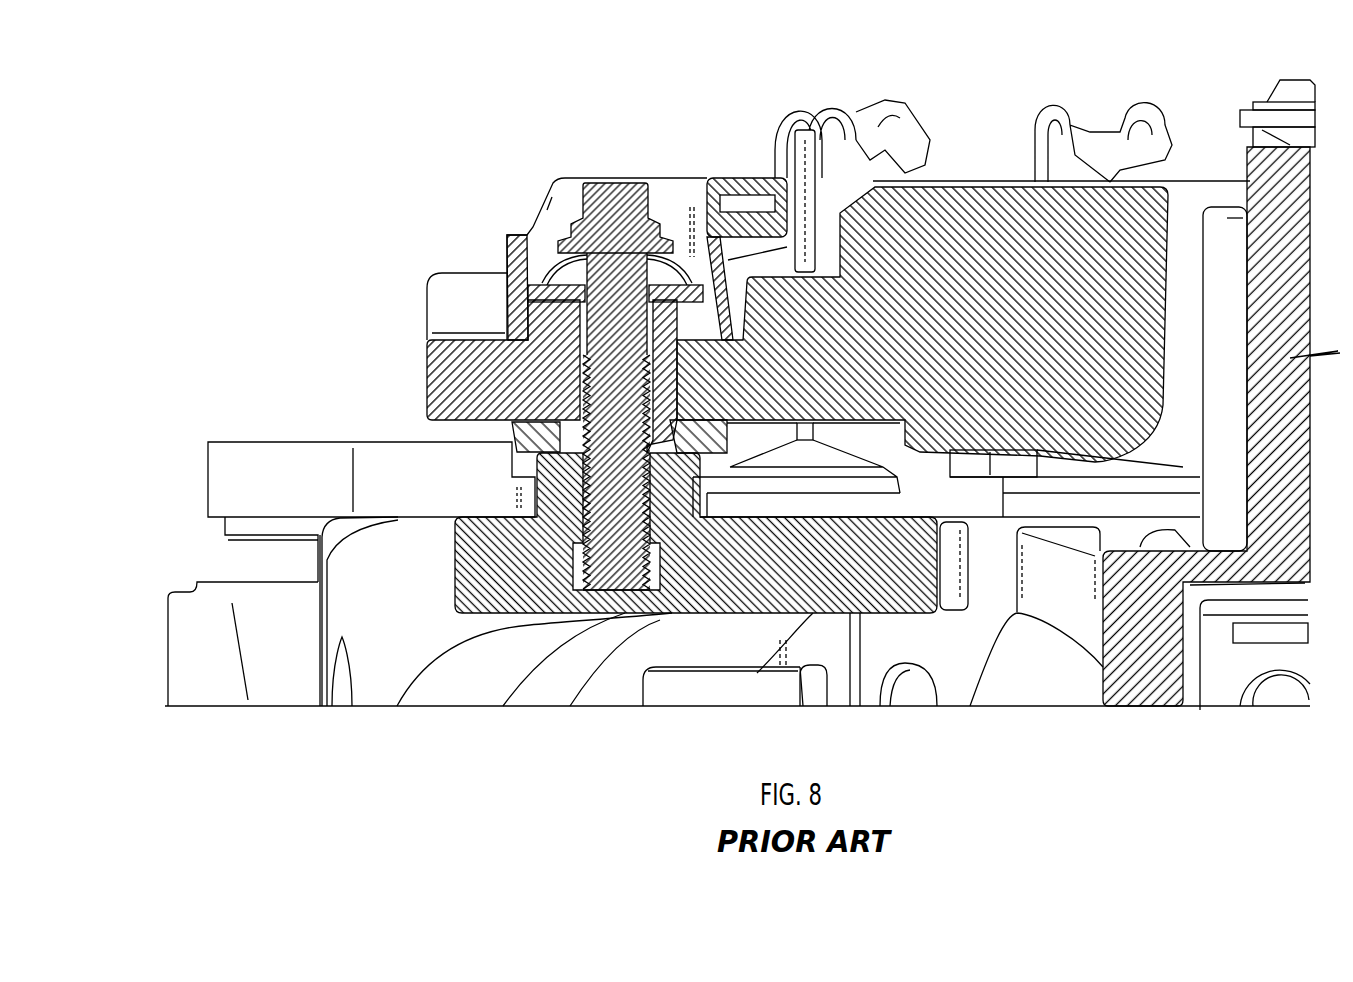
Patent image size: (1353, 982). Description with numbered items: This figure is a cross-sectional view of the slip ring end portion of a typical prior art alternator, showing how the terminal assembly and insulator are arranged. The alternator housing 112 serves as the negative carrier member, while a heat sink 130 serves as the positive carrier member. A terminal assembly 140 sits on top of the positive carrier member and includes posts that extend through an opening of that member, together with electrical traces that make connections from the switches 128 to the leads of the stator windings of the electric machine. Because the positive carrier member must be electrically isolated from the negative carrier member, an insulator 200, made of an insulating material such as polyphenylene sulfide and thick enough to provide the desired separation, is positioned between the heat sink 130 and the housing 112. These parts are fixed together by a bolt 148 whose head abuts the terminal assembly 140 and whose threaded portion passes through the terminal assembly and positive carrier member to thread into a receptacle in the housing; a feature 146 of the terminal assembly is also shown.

The alternator housing 112 is at (819, 585).
The switches 128 is at (726, 720).
The heat sink 130 is at (960, 288).
The terminal assembly 140 is at (520, 245).
The clip channel 146 is at (748, 203).
The bolt 148 is at (607, 213).
The insulator 200 is at (530, 437).